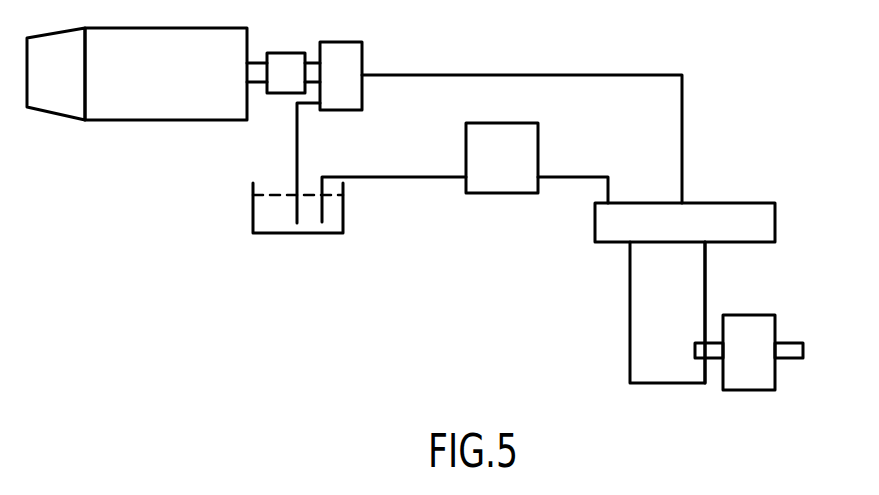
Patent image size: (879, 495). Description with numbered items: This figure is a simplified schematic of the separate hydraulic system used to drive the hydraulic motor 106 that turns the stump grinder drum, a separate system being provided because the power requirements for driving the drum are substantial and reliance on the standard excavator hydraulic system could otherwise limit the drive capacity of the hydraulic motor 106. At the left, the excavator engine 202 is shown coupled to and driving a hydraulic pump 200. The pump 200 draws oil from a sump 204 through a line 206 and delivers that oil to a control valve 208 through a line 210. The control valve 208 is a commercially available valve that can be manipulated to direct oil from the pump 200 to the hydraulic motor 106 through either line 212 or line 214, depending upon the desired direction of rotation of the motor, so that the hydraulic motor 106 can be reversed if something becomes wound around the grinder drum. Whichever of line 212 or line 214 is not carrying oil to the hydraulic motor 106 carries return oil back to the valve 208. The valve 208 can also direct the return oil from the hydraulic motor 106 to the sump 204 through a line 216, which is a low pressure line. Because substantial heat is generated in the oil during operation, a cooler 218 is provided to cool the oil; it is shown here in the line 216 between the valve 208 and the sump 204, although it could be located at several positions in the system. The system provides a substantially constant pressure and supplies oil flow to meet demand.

The hydraulic motor 106 is at (765, 332).
The hydraulic pump 200 is at (356, 57).
The excavator engine 202 is at (176, 84).
The sump 204 is at (252, 220).
The line 206 is at (293, 147).
The control valve 208 is at (762, 223).
The line 210 is at (515, 73).
The line 212 is at (630, 333).
The line 214 is at (703, 295).
The line 216 is at (418, 175).
The cooler 218 is at (498, 185).